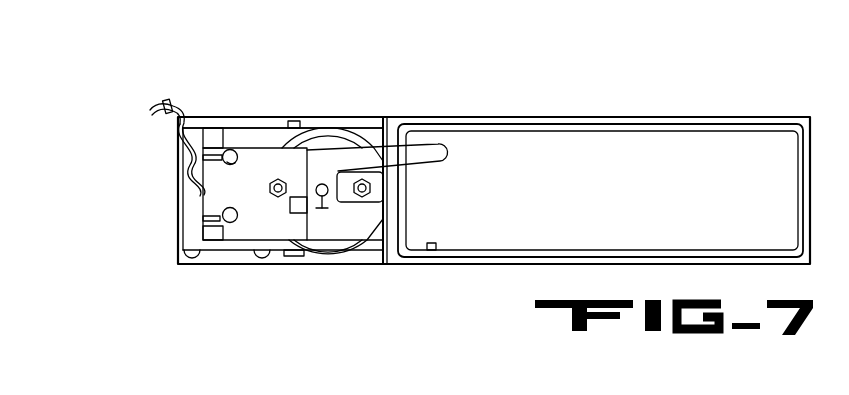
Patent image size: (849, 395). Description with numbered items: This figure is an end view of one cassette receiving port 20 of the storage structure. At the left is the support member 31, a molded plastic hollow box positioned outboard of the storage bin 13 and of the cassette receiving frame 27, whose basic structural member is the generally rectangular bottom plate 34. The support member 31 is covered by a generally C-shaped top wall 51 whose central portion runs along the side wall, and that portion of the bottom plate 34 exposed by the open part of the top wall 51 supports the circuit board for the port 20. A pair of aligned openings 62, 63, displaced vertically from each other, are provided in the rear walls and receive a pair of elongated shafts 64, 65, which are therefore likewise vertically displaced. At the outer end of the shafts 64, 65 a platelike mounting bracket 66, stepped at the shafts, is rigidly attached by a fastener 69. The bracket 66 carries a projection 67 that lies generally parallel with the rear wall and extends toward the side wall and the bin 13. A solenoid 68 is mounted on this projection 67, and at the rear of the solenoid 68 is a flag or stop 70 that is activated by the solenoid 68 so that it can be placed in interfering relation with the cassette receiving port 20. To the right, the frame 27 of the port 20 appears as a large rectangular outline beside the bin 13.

The cassette receiving port 20 is at (578, 80).
The cassette receiving frame 27 is at (690, 112).
The storage bin 13 is at (627, 194).
The support member 31 is at (180, 80).
The top wall 51 is at (272, 117).
The opening 62 is at (237, 161).
The opening 63 is at (237, 212).
The elongated shaft 64 is at (233, 150).
The elongated shaft 65 is at (233, 232).
The mounting bracket 66 is at (248, 240).
The projection 67 is at (353, 218).
The solenoid 68 is at (357, 143).
The fastener 69 is at (212, 135).
The flag or stop 70 is at (446, 152).
The bottom plate 34 is at (313, 258).